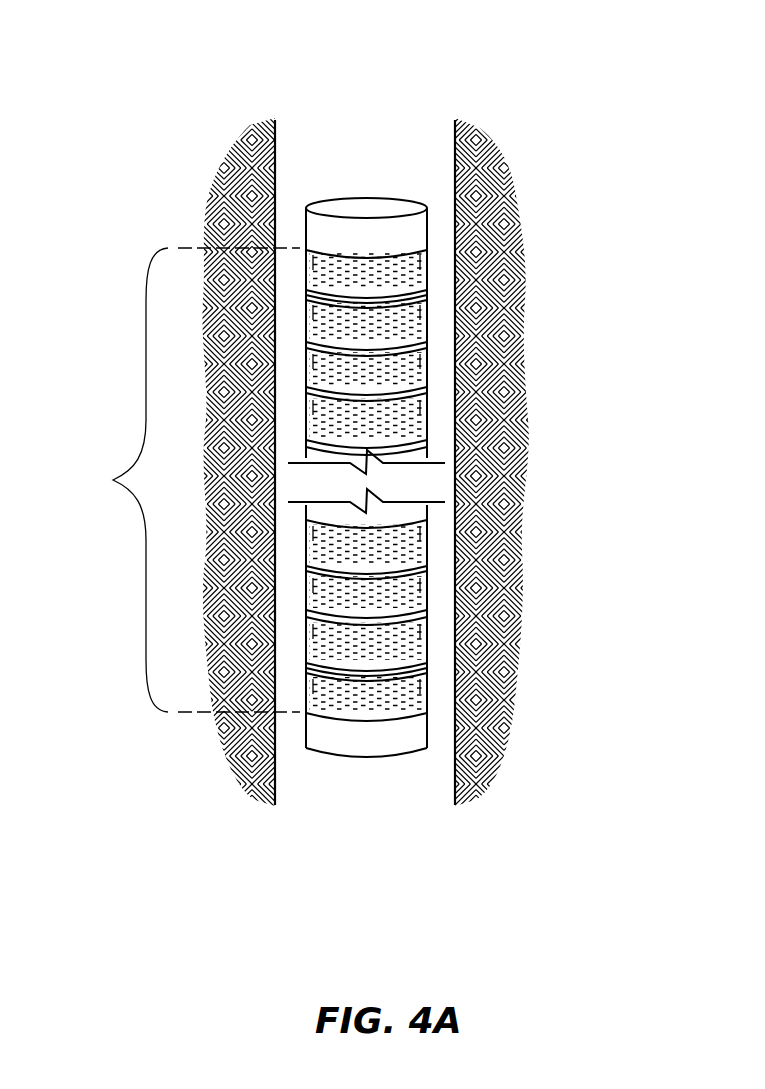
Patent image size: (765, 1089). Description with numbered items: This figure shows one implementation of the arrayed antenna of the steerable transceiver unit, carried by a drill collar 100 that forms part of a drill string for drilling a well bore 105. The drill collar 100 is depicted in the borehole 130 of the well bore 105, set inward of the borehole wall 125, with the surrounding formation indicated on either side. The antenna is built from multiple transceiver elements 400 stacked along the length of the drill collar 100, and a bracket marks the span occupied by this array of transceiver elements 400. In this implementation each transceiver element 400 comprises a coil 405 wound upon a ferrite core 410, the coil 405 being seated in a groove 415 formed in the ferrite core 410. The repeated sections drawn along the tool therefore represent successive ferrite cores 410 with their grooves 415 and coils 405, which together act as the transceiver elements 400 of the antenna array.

The drill collar 100 is at (287, 219).
The well bore 105 is at (326, 83).
The borehole wall 125 is at (455, 133).
The borehole 130 is at (277, 170).
The transceiver element 400 is at (180, 480).
The coil 405 is at (423, 297).
The ferrite core 410 is at (423, 262).
The groove 415 is at (423, 272).